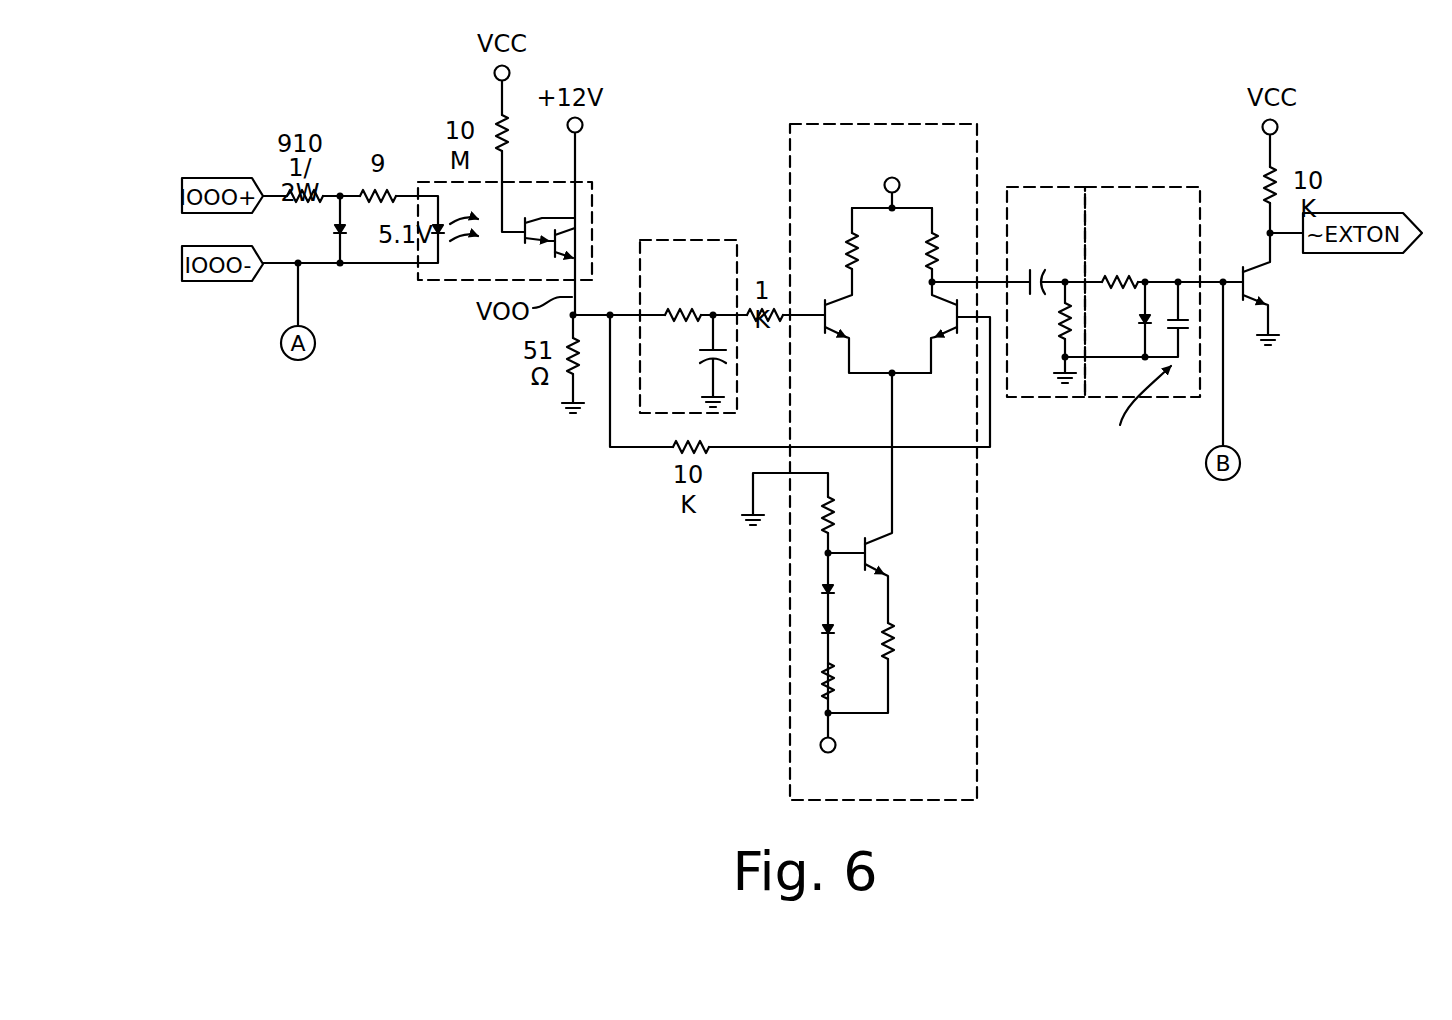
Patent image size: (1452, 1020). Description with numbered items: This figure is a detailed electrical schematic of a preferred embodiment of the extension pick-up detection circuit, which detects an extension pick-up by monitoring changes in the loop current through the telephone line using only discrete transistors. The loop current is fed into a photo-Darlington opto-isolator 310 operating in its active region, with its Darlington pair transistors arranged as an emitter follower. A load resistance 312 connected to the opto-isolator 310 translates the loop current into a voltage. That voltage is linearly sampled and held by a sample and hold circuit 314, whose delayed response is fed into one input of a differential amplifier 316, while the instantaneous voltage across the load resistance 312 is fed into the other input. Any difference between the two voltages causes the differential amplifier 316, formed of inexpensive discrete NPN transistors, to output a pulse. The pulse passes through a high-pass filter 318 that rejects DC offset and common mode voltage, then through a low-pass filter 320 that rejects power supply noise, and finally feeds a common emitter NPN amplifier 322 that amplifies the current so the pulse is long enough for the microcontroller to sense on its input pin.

The photo-Darlington opto-isolator 310 is at (592, 220).
The load resistance 312 is at (556, 377).
The sample and hold circuit 314 is at (700, 240).
The differential amplifier 316 is at (883, 124).
The high-pass filter 318 is at (1047, 187).
The low-pass filter 320 is at (1152, 187).
The common emitter NPN amplifier 322 is at (1300, 292).